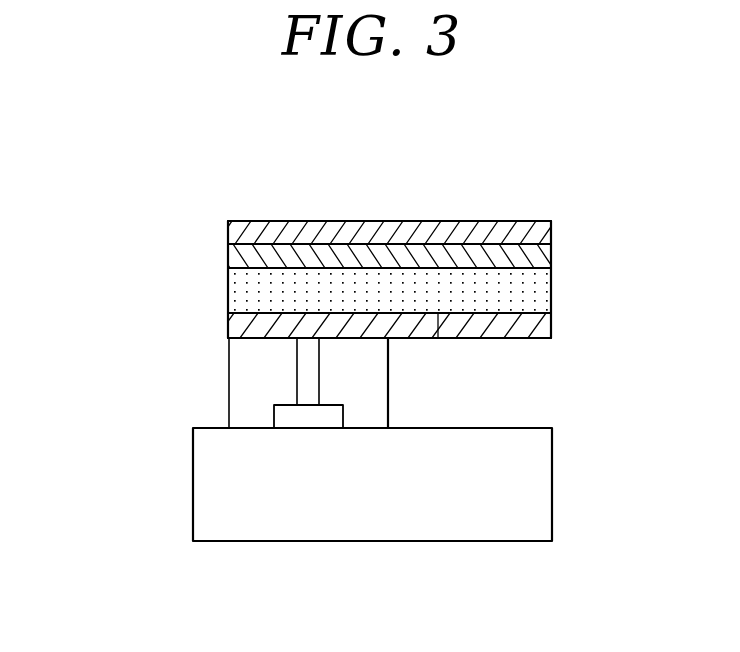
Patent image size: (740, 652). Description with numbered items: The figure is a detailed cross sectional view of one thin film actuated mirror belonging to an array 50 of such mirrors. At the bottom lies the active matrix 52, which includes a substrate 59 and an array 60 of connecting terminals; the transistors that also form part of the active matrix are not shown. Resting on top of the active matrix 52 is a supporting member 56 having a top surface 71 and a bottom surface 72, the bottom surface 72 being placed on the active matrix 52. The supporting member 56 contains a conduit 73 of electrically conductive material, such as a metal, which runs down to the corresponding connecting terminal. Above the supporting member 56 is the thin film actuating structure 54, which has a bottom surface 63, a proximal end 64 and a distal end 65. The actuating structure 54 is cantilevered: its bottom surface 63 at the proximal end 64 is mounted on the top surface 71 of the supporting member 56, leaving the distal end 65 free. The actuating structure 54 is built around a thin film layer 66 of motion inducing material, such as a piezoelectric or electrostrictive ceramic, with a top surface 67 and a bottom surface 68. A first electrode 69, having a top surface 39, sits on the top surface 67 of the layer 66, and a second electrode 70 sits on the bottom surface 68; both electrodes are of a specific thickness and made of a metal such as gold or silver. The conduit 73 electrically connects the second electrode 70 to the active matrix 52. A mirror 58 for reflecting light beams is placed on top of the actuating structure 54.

The array of thin film actuated mirrors 50 is at (463, 140).
The active matrix 52 is at (416, 524).
The thin film actuating structure 54 is at (356, 285).
The supporting member 56 is at (238, 374).
The mirror 58 is at (370, 227).
The substrate 59 is at (357, 527).
The array of connecting terminals 60 is at (224, 479).
The bottom surface of actuating structure 63 is at (540, 338).
The proximal end of actuating structure 64 is at (250, 292).
The distal end of actuating structure 65 is at (537, 285).
The thin film layer of motion inducing material 66 is at (506, 288).
The top surface of motion-inducing thin film layer 67 is at (335, 262).
The bottom surface of motion-inducing thin film layer 68 is at (438, 338).
The first electrode 69 is at (272, 250).
The second electrode 70 is at (240, 325).
The top surface of supporting member 71 is at (228, 342).
The bottom surface of supporting member 72 is at (373, 428).
The conduit 73 is at (298, 377).
The top surface of first electrode 39 is at (508, 227).